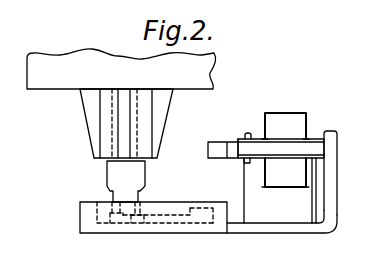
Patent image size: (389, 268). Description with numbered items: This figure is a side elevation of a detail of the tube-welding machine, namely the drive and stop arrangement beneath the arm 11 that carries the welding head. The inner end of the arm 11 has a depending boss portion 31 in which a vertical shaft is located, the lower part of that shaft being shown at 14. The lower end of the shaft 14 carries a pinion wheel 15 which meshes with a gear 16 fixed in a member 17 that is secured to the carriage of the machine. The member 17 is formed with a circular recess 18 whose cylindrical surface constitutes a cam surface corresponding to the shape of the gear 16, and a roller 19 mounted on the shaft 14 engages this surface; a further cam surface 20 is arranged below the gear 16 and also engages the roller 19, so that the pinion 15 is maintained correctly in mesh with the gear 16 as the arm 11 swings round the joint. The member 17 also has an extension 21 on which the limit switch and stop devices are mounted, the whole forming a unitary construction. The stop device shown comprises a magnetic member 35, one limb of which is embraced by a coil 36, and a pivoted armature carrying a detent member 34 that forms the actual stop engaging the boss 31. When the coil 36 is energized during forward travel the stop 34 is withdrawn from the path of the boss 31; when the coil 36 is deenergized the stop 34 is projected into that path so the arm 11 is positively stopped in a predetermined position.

The arm 11 is at (67, 56).
The depending boss portion 31 is at (166, 100).
The vertical shaft 14 is at (137, 128).
The pinion wheel 15 is at (139, 213).
The gear 16 is at (193, 210).
The member 17 is at (92, 227).
The circular recess 18 is at (98, 215).
The roller 19 is at (132, 223).
The cam surface 20 is at (168, 222).
The extension 21 is at (298, 229).
The detent member 34 is at (218, 148).
The magnetic member 35 is at (337, 143).
The coil 36 is at (284, 120).